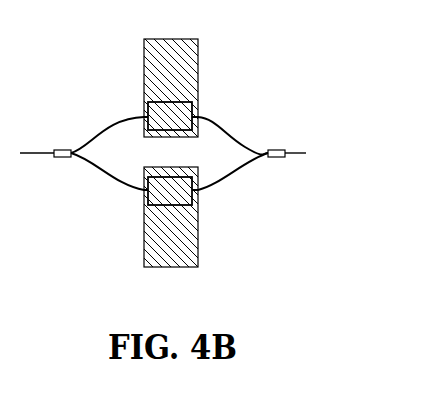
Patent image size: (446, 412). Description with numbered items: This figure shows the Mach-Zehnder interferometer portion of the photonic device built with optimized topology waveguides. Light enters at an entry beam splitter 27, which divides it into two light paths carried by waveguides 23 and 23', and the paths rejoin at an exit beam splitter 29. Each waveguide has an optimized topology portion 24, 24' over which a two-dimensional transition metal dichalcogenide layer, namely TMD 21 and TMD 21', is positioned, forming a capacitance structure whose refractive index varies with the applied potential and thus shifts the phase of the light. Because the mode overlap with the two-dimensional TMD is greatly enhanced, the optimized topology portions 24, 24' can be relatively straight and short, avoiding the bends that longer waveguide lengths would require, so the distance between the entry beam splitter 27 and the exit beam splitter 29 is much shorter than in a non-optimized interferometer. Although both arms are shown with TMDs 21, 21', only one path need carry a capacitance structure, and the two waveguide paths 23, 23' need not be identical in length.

The 2D TMD 21 is at (167, 82).
The 2D TMD 21' is at (166, 227).
The optimized topology waveguide 23 is at (171, 118).
The waveguide 23' is at (169, 190).
The optimized topology portion 24 is at (197, 93).
The optimized topology portion 24' is at (198, 211).
The entry beam splitter 27 is at (70, 150).
The exit beam splitter 29 is at (272, 158).